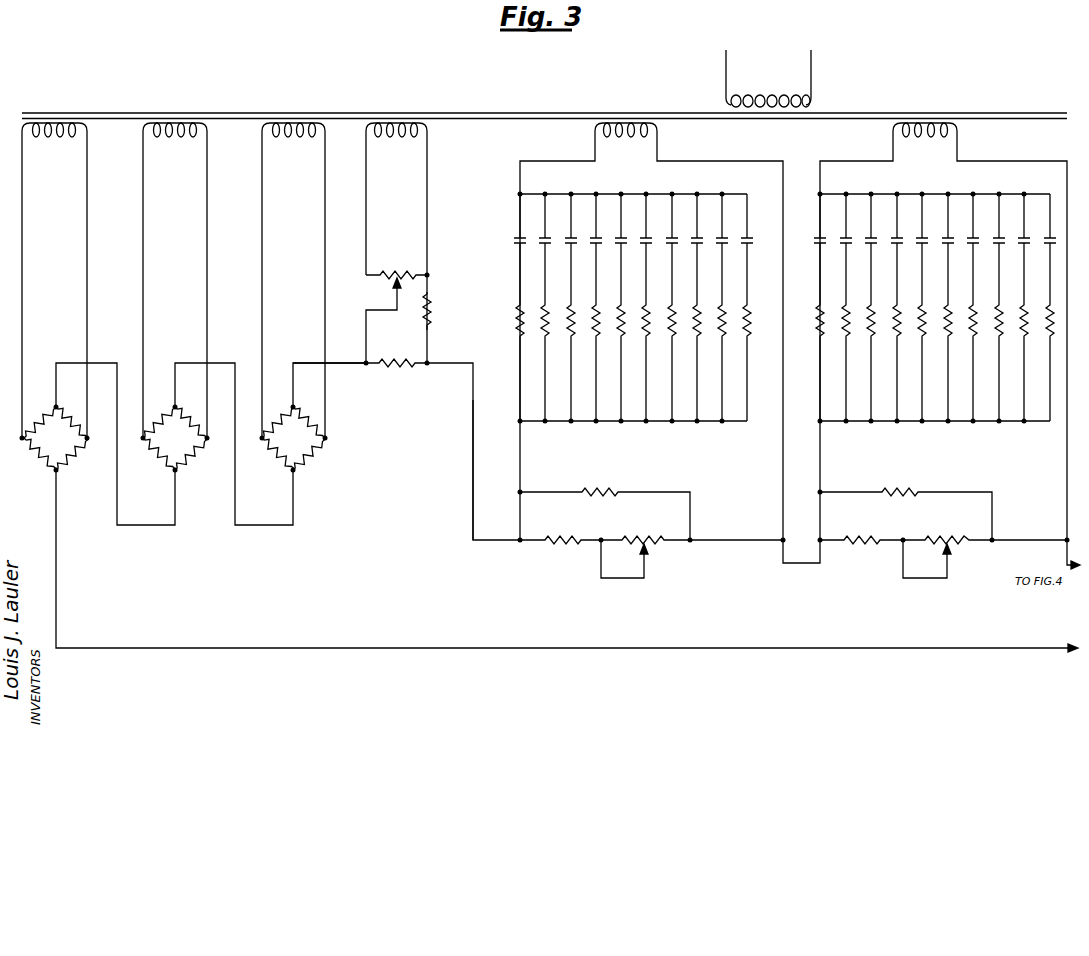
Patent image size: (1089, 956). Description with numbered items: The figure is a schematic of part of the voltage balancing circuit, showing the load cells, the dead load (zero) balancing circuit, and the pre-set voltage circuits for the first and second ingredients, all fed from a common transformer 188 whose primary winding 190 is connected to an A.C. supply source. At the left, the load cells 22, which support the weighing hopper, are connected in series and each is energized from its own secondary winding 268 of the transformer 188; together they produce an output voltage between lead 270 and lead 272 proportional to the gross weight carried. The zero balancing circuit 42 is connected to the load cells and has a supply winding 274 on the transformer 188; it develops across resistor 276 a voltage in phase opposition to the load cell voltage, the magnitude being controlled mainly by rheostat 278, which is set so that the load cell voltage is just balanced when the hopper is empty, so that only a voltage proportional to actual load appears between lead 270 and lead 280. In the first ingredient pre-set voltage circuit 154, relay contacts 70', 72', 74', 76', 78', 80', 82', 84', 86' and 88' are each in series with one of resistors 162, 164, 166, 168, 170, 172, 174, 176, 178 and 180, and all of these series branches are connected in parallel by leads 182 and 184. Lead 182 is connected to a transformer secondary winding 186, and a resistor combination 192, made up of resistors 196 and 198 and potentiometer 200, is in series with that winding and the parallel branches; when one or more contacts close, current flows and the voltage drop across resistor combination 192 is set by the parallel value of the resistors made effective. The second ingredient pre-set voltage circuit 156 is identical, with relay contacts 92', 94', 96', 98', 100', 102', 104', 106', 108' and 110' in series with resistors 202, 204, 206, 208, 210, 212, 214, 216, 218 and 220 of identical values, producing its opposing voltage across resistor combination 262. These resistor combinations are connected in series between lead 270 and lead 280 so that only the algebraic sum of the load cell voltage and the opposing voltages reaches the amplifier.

The load cells 22 is at (34, 456).
The zero balancing circuit 42 is at (416, 367).
The relay contacts 70' is at (511, 232).
The relay contacts 72' is at (538, 232).
The relay contacts 74' is at (564, 232).
The relay contacts 76' is at (589, 232).
The relay contacts 78' is at (614, 232).
The relay contacts 80' is at (639, 232).
The relay contacts 82' is at (664, 232).
The relay contacts 84' is at (689, 232).
The relay contacts 86' is at (714, 232).
The relay contacts 88' is at (757, 232).
The relay contacts 92' is at (809, 232).
The relay contacts 94' is at (836, 232).
The relay contacts 96' is at (862, 232).
The relay contacts 98' is at (889, 232).
The relay contacts 100' is at (913, 232).
The relay contacts 102' is at (939, 232).
The relay contacts 104' is at (964, 232).
The relay contacts 106' is at (990, 232).
The relay contacts 108' is at (1016, 232).
The relay contacts 110' is at (1041, 232).
The #1 ingredient pre-set voltage circuit 154 is at (720, 546).
The #2 ingredient pre-set voltage circuit 156 is at (971, 546).
The resistor 162 is at (515, 334).
The resistor 164 is at (541, 334).
The resistor 166 is at (567, 334).
The resistor 168 is at (592, 334).
The resistor 170 is at (617, 334).
The resistor 172 is at (642, 334).
The resistor 174 is at (668, 334).
The resistor 176 is at (693, 334).
The resistor 178 is at (718, 334).
The resistor 180 is at (750, 336).
The lead 182 is at (638, 194).
The lead 184 is at (633, 422).
The transformer secondary winding 186 is at (618, 137).
The transformer 188 is at (703, 110).
The primary winding 190 is at (772, 98).
The resistor combination 192 is at (592, 548).
The resistor 196 is at (601, 491).
The resistor 198 is at (569, 538).
The potentiometer 200 is at (651, 546).
The resistor 202 is at (815, 334).
The resistor 204 is at (842, 334).
The resistor 206 is at (867, 334).
The resistor 208 is at (893, 334).
The resistor 210 is at (918, 334).
The resistor 212 is at (944, 334).
The resistor 214 is at (969, 334).
The resistor 216 is at (995, 334).
The resistor 218 is at (1020, 334).
The resistor 220 is at (1046, 334).
The resistor combination 262 is at (897, 548).
The secondary winding 268 is at (46, 138).
The lead 270 is at (266, 640).
The lead 272 is at (344, 366).
The supply winding 274 is at (392, 137).
The resistor 276 is at (398, 362).
The rheostat 278 is at (398, 272).
The lead 280 is at (473, 468).